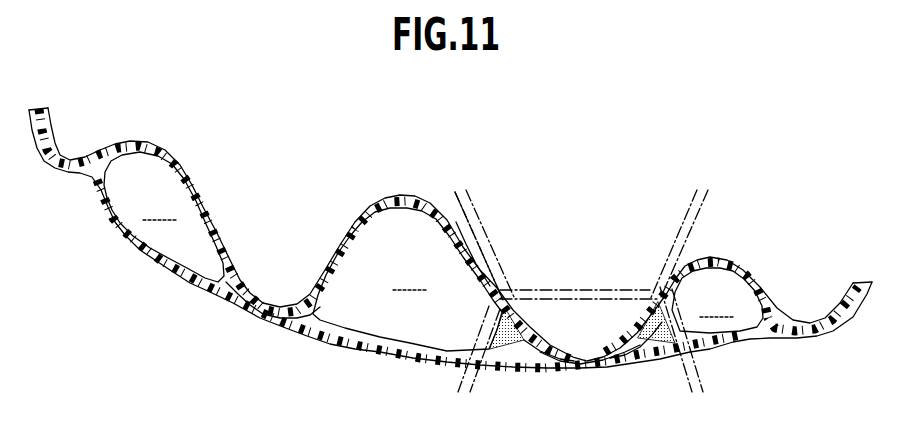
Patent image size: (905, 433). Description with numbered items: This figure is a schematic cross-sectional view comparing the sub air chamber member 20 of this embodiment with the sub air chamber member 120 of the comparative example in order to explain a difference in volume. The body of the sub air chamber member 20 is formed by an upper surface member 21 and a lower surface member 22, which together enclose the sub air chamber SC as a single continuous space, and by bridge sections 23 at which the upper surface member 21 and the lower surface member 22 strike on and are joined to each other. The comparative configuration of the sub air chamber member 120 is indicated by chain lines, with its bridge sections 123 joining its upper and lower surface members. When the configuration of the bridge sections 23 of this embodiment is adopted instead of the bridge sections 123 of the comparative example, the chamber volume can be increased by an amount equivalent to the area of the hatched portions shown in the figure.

The sub air chamber member 20 is at (738, 284).
The upper surface member 21 is at (352, 234).
The lower surface member 22 is at (450, 258).
The bridge sections 23 is at (582, 363).
The sub air chamber member 120 is at (581, 283).
The bridge sections 123 is at (580, 258).